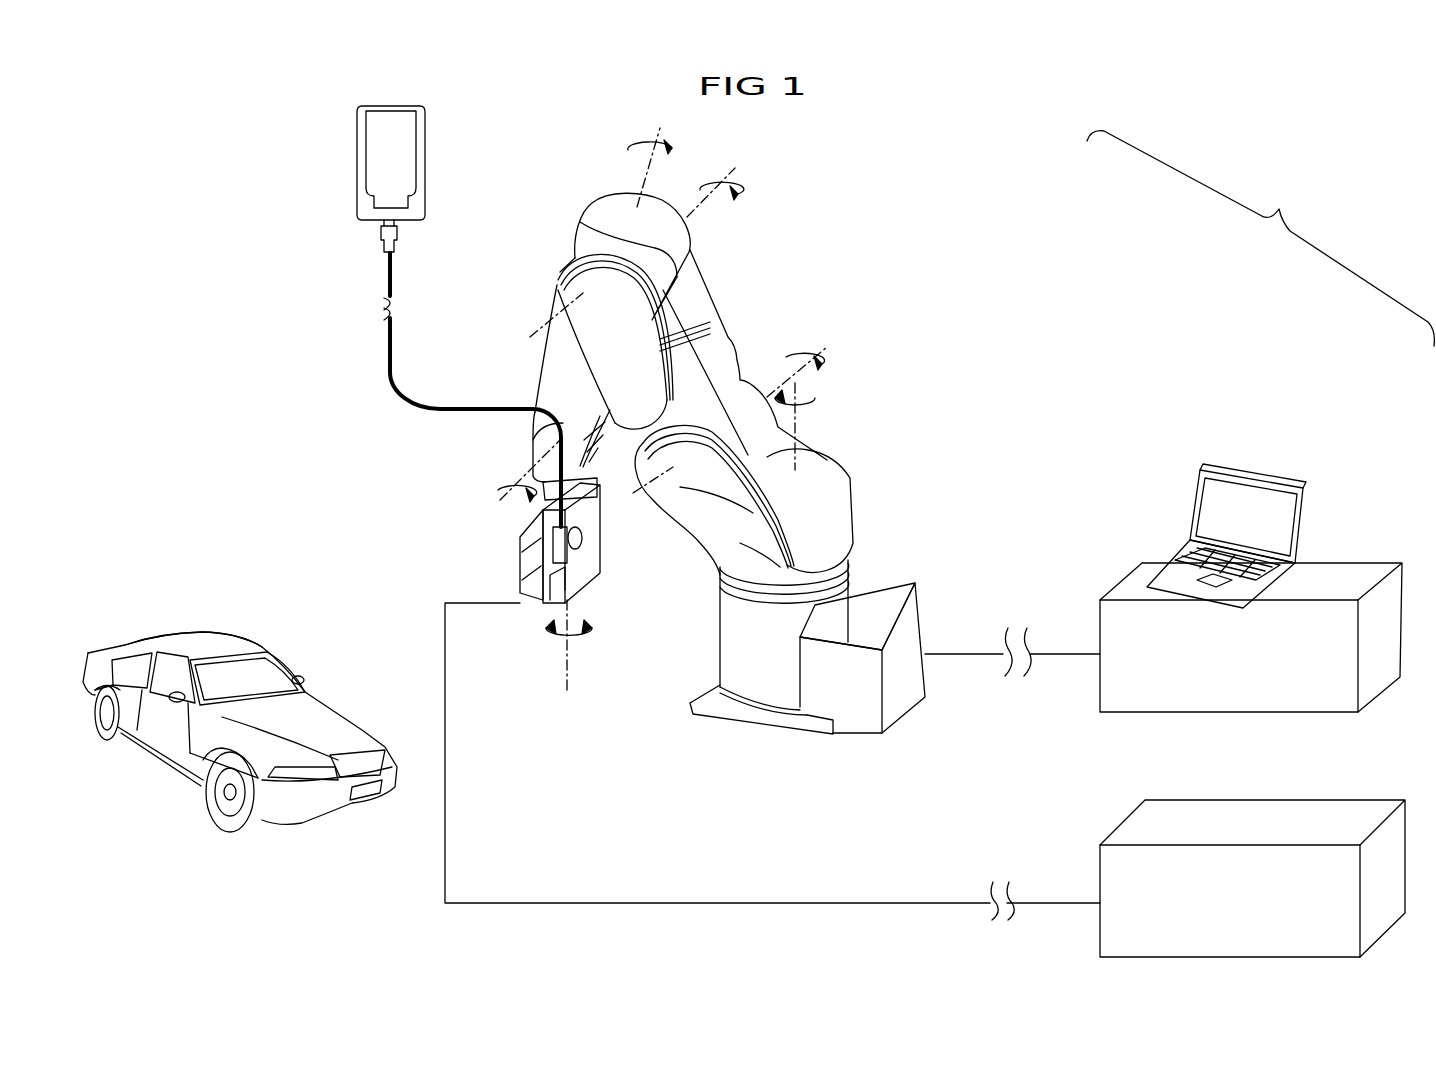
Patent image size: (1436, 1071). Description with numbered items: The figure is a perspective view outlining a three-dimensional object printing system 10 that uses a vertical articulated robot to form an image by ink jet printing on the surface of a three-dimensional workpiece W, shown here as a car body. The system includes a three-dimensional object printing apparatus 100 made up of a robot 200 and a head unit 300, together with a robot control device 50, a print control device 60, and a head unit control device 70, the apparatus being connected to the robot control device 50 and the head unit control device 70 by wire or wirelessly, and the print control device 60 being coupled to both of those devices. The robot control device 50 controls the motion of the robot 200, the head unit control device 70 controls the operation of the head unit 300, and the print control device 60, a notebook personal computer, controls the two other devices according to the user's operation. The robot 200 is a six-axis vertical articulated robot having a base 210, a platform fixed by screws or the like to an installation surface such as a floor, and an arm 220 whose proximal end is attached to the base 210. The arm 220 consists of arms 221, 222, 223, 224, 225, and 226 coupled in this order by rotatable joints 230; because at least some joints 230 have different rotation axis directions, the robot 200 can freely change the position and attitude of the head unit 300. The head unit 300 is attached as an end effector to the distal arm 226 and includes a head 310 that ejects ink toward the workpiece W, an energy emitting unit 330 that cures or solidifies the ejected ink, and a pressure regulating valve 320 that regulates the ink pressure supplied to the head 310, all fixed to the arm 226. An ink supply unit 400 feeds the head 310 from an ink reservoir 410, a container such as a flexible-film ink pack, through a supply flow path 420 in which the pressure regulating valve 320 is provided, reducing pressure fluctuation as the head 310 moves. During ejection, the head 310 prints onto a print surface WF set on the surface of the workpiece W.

The three-dimensional object printing system 10 is at (1260, 238).
The robot control device 50 is at (1348, 560).
The print control device 60 is at (1255, 474).
The head unit control device 70 is at (1348, 802).
The three-dimensional object printing apparatus 100 is at (1036, 228).
The robot 200 is at (882, 302).
The base 210 is at (778, 690).
The arm 220 is at (562, 268).
The arm 221 is at (820, 452).
The arm 222 is at (713, 303).
The arm 223 is at (605, 206).
The arm 224 is at (543, 372).
The arm 225 is at (600, 453).
The arm 226 is at (560, 493).
The joints 230 is at (580, 290).
The head unit 300 is at (520, 545).
The head 310 is at (540, 603).
The pressure regulating valve 320 is at (555, 571).
The energy emitting unit 330 is at (528, 560).
The ink supply unit 400 is at (388, 278).
The ink reservoir 410 is at (428, 153).
The supply flow path 420 is at (388, 352).
The workpiece W is at (204, 632).
The print surface WF is at (228, 636).